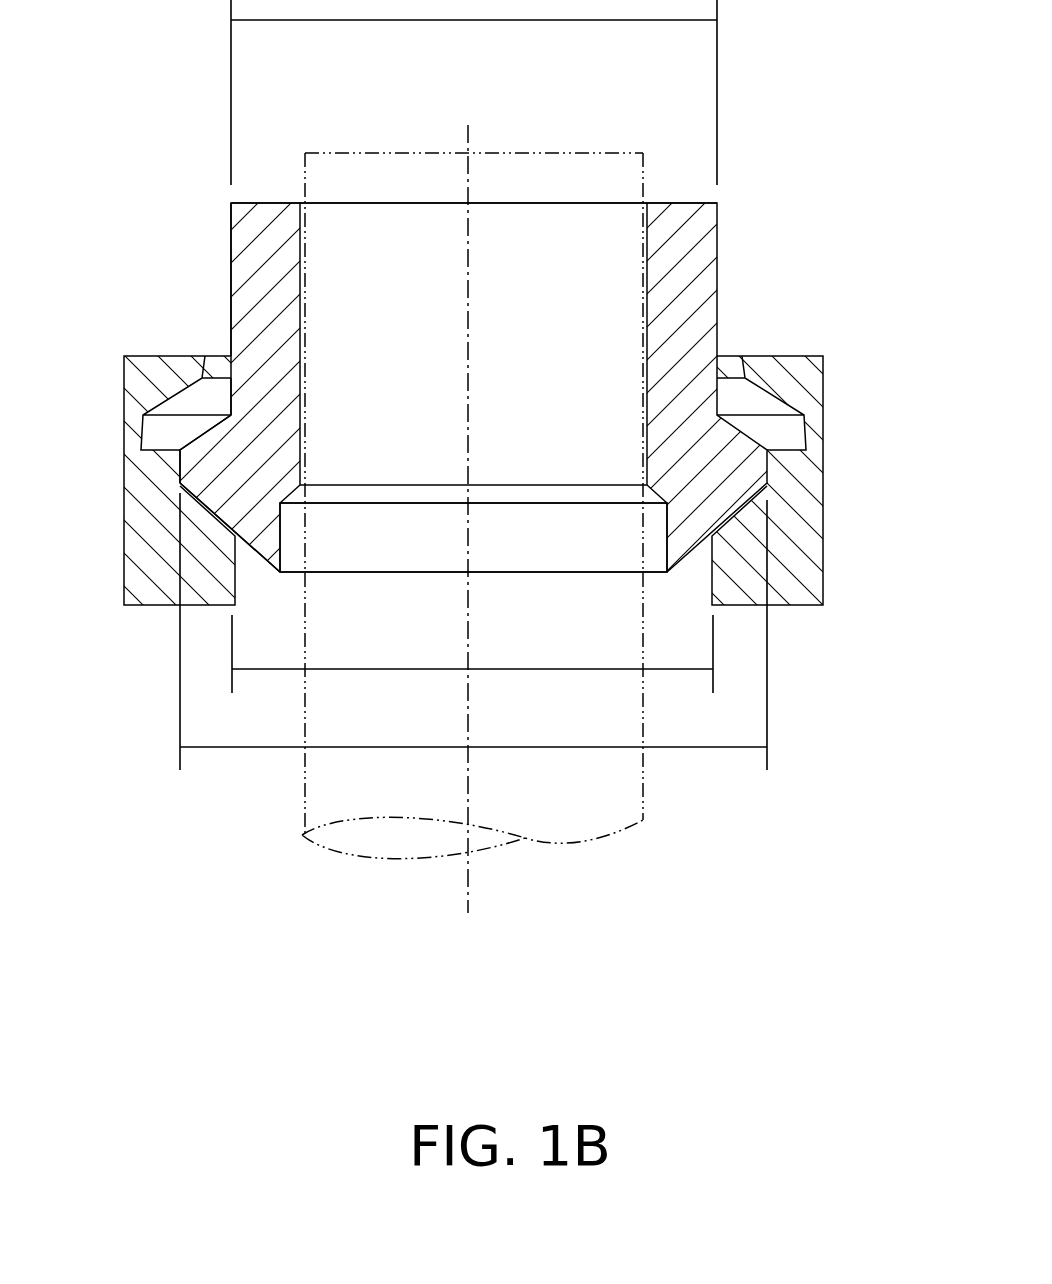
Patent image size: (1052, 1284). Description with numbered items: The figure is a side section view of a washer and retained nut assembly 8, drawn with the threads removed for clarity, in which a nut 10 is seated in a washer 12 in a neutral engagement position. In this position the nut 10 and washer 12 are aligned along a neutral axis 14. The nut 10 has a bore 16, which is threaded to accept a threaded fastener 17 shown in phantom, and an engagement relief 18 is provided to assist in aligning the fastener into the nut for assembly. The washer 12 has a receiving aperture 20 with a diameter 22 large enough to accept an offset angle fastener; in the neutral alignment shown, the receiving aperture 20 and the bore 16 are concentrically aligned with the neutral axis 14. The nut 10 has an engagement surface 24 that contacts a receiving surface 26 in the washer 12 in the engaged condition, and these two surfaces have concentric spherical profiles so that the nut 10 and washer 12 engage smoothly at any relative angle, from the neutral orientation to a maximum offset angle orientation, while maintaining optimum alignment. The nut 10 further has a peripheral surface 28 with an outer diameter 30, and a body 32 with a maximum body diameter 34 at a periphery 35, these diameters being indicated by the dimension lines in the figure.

The washer and retained nut assembly 8 is at (780, 228).
The nut 10 is at (718, 317).
The washer 12 is at (807, 538).
The neutral axis 14 is at (467, 142).
The bore 16 is at (645, 305).
The threaded fastener 17 is at (378, 300).
The engagement relief 18 is at (667, 540).
The receiving aperture 20 is at (234, 578).
The diameter 22 is at (430, 672).
The engagement surface 24 is at (243, 440).
The receiving surface 26 is at (253, 400).
The peripheral surface 28 is at (180, 467).
The outer diameter 30 is at (522, 748).
The body 32 is at (258, 287).
The maximum body diameter 34 is at (567, 22).
The periphery 35 is at (231, 260).